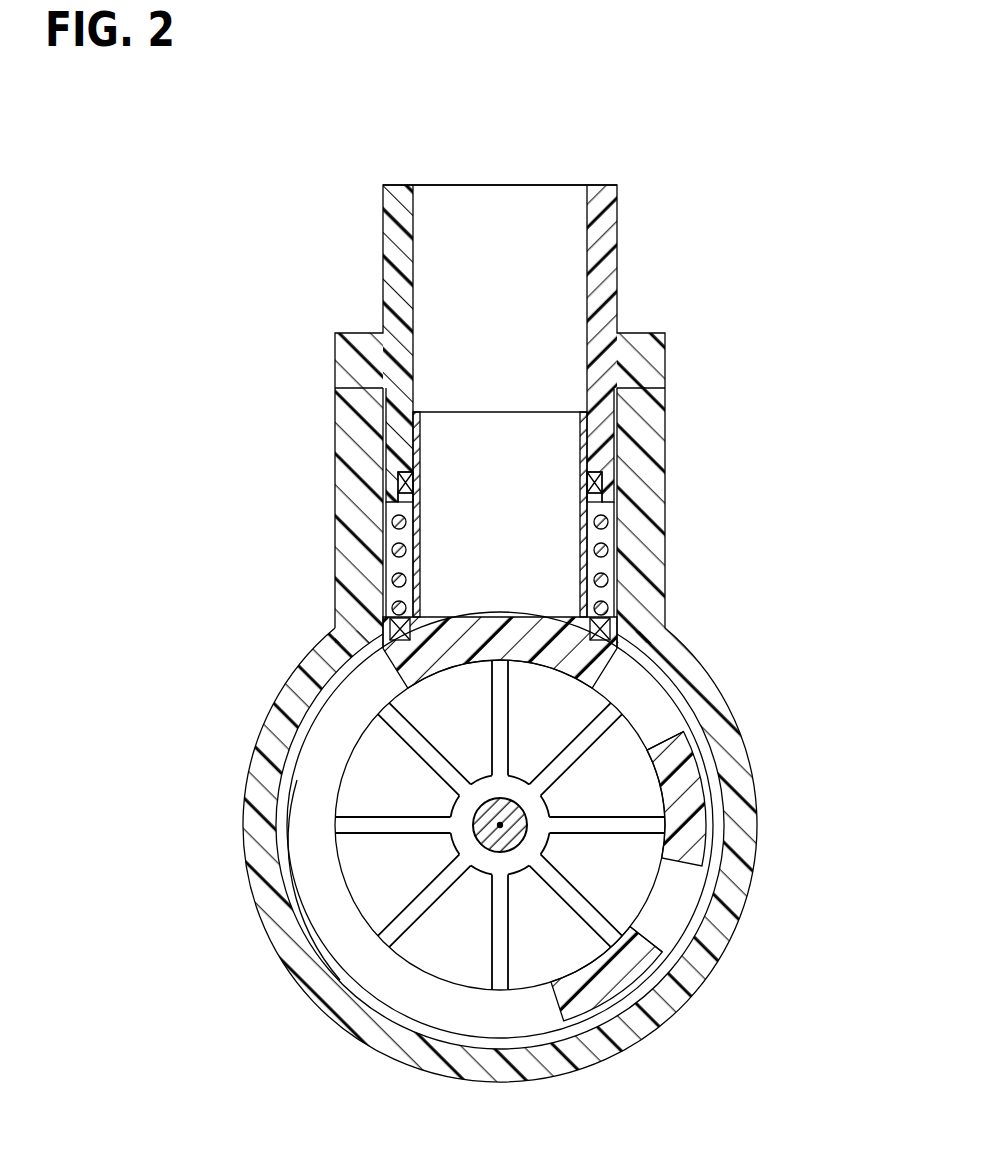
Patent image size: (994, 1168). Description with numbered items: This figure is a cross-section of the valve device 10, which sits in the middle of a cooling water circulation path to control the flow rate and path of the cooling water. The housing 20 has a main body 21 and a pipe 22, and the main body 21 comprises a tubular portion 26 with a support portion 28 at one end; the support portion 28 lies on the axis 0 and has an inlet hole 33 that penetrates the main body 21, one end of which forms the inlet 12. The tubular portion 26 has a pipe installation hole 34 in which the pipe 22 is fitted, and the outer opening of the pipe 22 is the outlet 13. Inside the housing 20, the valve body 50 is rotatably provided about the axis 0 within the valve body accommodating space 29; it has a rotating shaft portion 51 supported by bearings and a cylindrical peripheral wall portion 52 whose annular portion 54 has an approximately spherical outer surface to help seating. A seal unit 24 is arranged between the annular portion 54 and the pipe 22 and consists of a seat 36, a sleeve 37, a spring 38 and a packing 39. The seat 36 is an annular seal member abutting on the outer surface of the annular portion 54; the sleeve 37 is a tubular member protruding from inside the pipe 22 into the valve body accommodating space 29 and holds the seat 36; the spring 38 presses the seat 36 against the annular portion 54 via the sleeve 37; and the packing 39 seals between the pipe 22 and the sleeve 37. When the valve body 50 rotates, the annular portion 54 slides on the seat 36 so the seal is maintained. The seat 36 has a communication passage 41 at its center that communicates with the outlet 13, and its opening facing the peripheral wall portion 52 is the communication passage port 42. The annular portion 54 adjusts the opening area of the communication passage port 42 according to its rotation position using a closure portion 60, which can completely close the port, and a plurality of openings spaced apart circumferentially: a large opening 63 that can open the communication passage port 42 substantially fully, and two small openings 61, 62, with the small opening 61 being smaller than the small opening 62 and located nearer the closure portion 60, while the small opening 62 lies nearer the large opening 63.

The valve device 10 is at (318, 227).
The outlet 13 is at (545, 183).
The pipe 22 is at (618, 240).
The pipe installation hole 34 is at (603, 388).
The packing 39 is at (604, 478).
The spring 38 is at (603, 497).
The sleeve 37 is at (589, 534).
The seat 36 is at (546, 559).
The seal unit 24 is at (570, 514).
The closure portion 60 is at (500, 640).
The communication passage 41 is at (398, 582).
The communication passage port 42 is at (397, 636).
The housing 20 is at (692, 641).
The small opening 61 is at (655, 745).
The peripheral wall portion 52 is at (465, 800).
The inlet hole 33 is at (620, 810).
The axis 0 is at (500, 825).
The tubular portion 26 is at (750, 822).
The rotating shaft portion 51 is at (478, 842).
The small opening 62 is at (690, 862).
The support portion 28 is at (538, 848).
The valve body 50 is at (316, 935).
The valve body accommodating space 29 is at (355, 985).
The main body 21 is at (430, 1050).
The large opening 63 is at (548, 1000).
The inlet 12 is at (553, 935).
The annular portion 54 is at (625, 958).